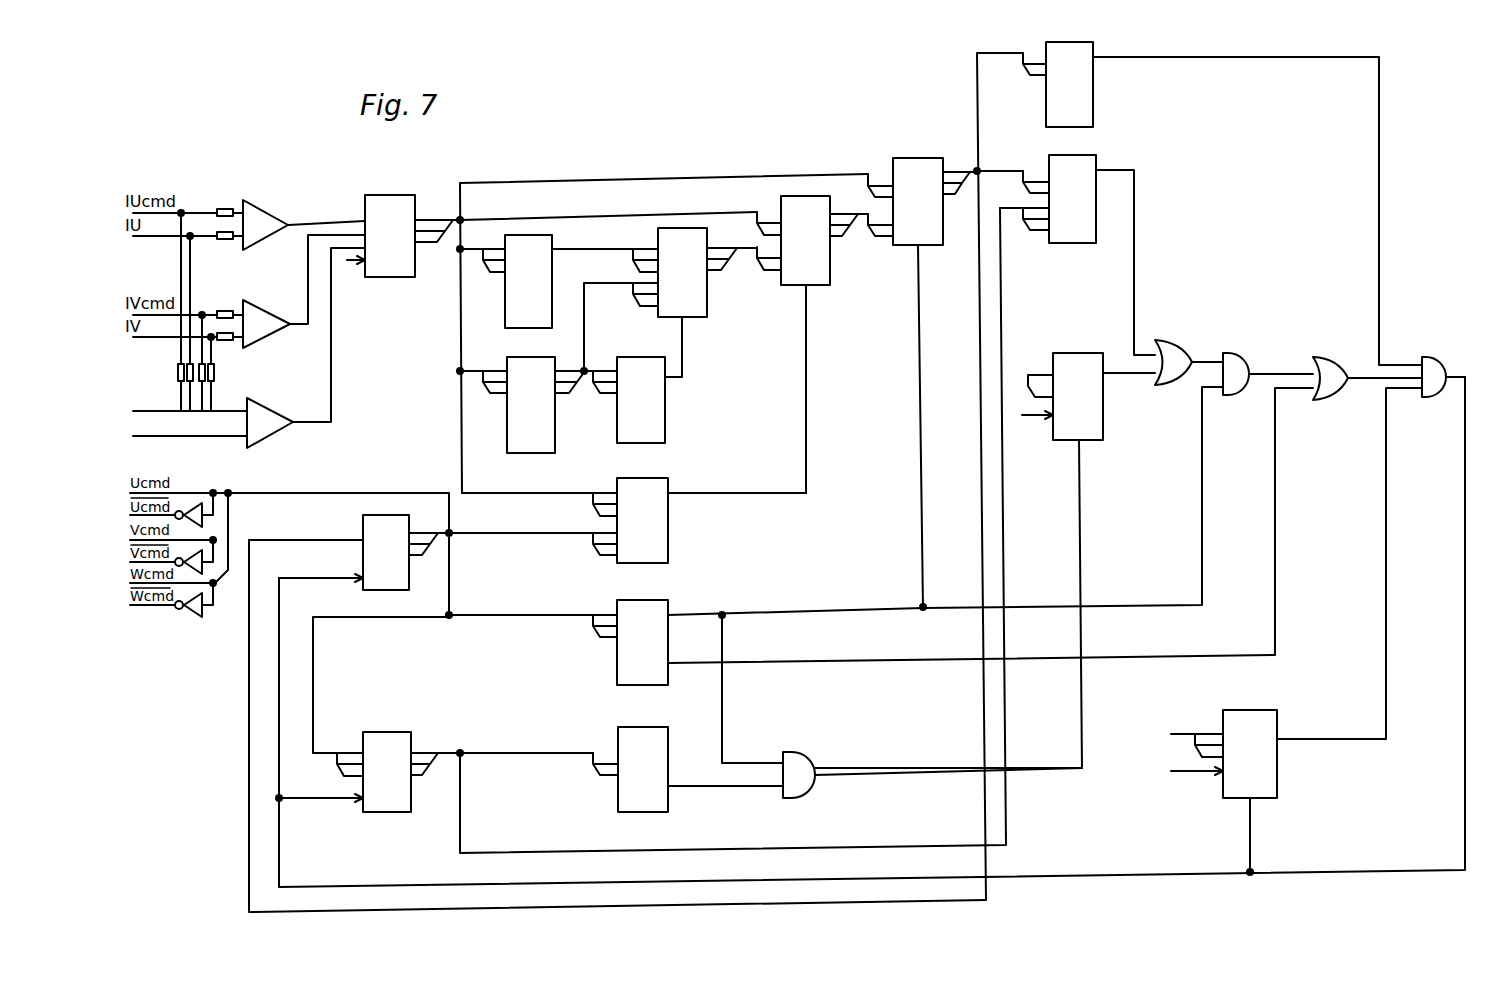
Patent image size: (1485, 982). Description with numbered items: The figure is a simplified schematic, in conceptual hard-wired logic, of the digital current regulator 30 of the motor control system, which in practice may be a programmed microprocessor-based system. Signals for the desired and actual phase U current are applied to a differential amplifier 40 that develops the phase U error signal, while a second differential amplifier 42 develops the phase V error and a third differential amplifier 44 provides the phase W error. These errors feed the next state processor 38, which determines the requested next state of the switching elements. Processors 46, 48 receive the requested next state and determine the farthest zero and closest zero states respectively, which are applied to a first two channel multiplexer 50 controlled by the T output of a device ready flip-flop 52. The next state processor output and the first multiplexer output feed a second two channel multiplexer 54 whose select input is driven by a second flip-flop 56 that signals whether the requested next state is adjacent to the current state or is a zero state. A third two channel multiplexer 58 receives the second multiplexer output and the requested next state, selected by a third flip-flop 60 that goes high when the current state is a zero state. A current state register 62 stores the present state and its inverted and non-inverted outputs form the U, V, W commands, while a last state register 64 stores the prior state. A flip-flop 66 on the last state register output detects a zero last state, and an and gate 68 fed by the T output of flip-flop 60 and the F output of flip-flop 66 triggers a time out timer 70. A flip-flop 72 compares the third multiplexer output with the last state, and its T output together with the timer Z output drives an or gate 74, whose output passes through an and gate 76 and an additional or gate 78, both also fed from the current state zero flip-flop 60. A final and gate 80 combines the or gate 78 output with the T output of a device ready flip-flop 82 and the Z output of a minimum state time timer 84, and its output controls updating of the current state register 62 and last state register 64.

The digital current regulator 30 is at (727, 116).
The next state processor 38 is at (404, 195).
The differential amplifier 40 is at (256, 203).
The second differential amplifier 42 is at (257, 300).
The third differential amplifier 44 is at (260, 398).
The processor 46 is at (505, 305).
The processor 48 is at (507, 412).
The first two channel multiplexer 50 is at (707, 302).
The device ready flip-flop 52 is at (665, 408).
The second two channel multiplexer 54 is at (830, 271).
The second flip-flop 56 is at (668, 533).
The third two channel multiplexer 58 is at (918, 158).
The third flip-flop 60 is at (628, 670).
The current state register 62 is at (363, 519).
The last state register 64 is at (400, 740).
The last state zero flip-flop 66 is at (618, 794).
The and gate 68 is at (800, 756).
The time out timer 70 is at (1086, 425).
The flip-flop 72 is at (1098, 157).
The or gate 74 is at (1175, 342).
The and gate 76 is at (1245, 345).
The additional or gate 78 is at (1318, 357).
The and gate 80 is at (1430, 357).
The device ready flip-flop 82 is at (1093, 84).
The minimum state time timer 84 is at (1268, 710).